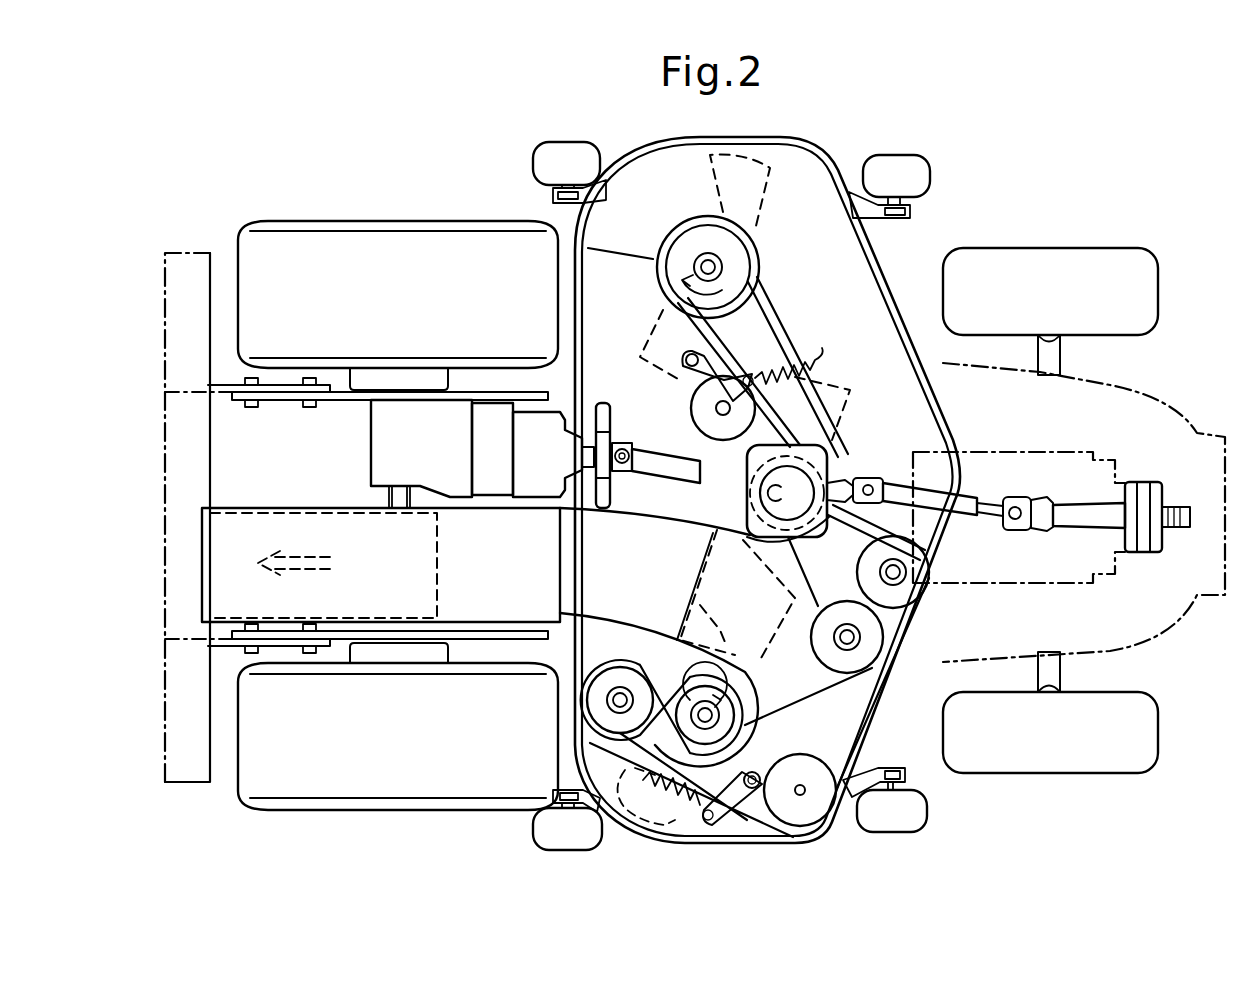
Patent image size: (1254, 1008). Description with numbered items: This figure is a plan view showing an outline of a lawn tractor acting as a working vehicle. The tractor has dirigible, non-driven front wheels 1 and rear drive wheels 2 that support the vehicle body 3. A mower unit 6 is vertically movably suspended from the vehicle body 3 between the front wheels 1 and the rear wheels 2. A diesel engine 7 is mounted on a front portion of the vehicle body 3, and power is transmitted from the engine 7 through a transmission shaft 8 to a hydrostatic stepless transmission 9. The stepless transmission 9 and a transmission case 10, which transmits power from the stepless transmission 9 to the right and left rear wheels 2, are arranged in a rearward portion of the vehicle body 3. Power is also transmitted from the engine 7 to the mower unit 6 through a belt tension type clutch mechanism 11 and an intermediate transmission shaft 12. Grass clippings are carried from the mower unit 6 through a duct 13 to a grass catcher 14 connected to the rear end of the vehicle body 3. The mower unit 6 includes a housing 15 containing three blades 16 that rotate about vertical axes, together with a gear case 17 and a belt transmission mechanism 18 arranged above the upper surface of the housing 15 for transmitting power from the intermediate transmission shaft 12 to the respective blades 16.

The front wheels 1 is at (1076, 262).
The rear drive wheels 2 is at (362, 245).
The vehicle body 3 is at (1152, 392).
The mower unit 6 is at (897, 247).
The diesel engine 7 is at (1080, 592).
The transmission shaft 8 is at (660, 452).
The hydrostatic stepless transmission 9 is at (536, 485).
The transmission case 10 is at (385, 443).
The belt tension type clutch mechanism 11 is at (1156, 575).
The intermediate transmission shaft 12 is at (962, 502).
The duct 13 is at (293, 532).
The grass catcher 14 is at (183, 250).
The housing 15 is at (875, 339).
The blades 16 is at (660, 310).
The gear case 17 is at (760, 520).
The belt transmission mechanism 18 is at (781, 302).